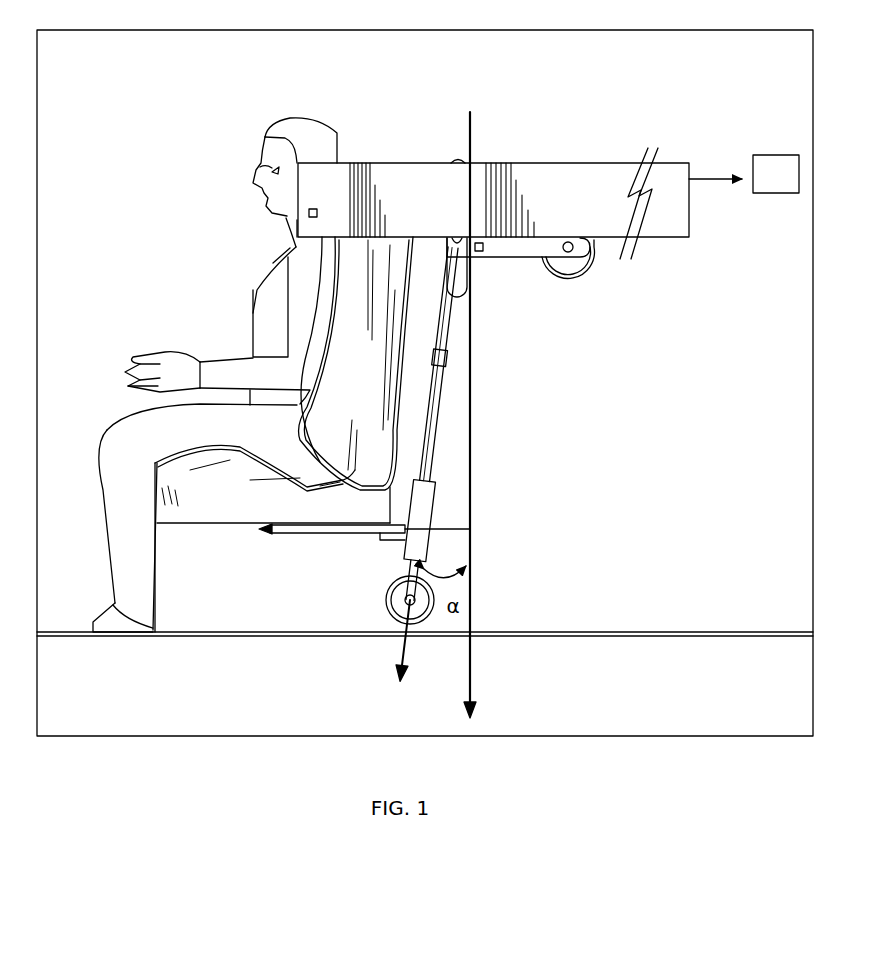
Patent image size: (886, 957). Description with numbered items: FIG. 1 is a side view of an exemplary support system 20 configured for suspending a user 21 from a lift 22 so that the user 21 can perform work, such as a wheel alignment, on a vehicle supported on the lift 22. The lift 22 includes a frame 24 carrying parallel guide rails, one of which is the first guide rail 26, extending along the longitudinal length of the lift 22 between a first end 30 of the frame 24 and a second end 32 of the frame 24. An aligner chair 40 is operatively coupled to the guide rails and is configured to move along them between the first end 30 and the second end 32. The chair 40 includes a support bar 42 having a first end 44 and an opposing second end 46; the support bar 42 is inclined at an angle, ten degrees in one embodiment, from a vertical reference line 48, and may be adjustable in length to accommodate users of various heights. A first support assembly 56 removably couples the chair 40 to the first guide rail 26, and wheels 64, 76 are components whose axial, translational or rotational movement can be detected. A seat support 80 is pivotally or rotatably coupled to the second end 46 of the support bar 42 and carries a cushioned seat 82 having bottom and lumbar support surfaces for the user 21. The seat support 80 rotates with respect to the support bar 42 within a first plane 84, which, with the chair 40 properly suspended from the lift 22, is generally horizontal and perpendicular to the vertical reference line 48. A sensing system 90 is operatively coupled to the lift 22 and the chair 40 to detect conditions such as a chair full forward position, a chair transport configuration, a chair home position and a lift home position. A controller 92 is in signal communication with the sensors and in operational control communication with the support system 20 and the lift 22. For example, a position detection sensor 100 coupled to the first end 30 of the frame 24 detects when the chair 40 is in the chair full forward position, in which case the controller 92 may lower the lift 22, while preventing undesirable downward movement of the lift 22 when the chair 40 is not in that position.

The support system 20 is at (553, 75).
The user 21 is at (262, 331).
The lift 22 is at (489, 136).
The frame 24 is at (682, 262).
The first guide rail 26 is at (409, 214).
The first end of frame 30 is at (306, 150).
The second end of frame 32 is at (684, 148).
The chair 40 is at (281, 591).
The support bar 42 is at (429, 362).
The first end of support bar 44 is at (430, 336).
The second end of support bar 46 is at (453, 585).
The vertical reference line 48 is at (476, 621).
The first support assembly 56 is at (527, 268).
The wheel 64 is at (579, 272).
The wheel 76 is at (386, 601).
The seat support 80 is at (340, 535).
The cushioned seat 82 is at (344, 394).
The first plane 84 is at (464, 531).
The sensing system 90 is at (279, 226).
The controller 92 is at (765, 187).
The position detection sensor 100 is at (317, 213).